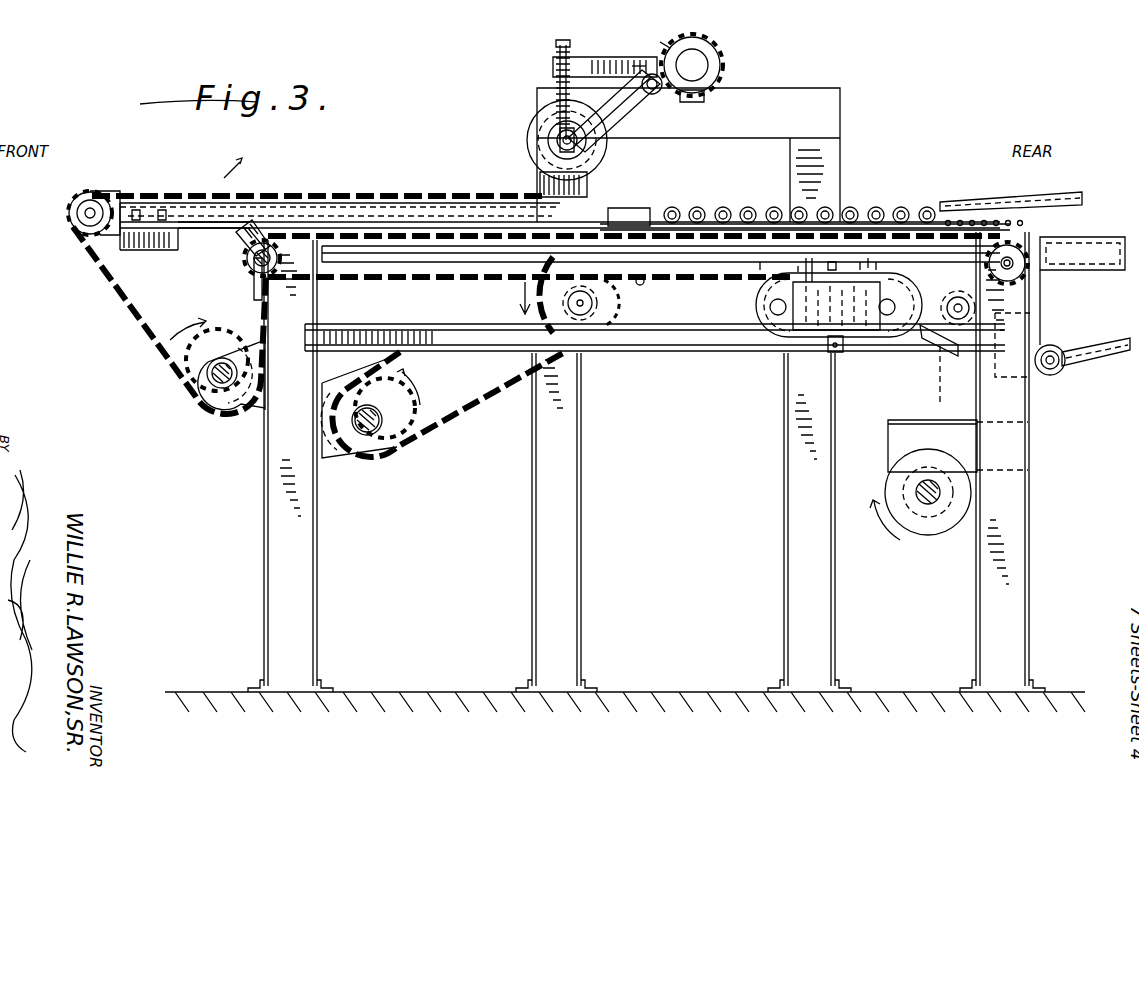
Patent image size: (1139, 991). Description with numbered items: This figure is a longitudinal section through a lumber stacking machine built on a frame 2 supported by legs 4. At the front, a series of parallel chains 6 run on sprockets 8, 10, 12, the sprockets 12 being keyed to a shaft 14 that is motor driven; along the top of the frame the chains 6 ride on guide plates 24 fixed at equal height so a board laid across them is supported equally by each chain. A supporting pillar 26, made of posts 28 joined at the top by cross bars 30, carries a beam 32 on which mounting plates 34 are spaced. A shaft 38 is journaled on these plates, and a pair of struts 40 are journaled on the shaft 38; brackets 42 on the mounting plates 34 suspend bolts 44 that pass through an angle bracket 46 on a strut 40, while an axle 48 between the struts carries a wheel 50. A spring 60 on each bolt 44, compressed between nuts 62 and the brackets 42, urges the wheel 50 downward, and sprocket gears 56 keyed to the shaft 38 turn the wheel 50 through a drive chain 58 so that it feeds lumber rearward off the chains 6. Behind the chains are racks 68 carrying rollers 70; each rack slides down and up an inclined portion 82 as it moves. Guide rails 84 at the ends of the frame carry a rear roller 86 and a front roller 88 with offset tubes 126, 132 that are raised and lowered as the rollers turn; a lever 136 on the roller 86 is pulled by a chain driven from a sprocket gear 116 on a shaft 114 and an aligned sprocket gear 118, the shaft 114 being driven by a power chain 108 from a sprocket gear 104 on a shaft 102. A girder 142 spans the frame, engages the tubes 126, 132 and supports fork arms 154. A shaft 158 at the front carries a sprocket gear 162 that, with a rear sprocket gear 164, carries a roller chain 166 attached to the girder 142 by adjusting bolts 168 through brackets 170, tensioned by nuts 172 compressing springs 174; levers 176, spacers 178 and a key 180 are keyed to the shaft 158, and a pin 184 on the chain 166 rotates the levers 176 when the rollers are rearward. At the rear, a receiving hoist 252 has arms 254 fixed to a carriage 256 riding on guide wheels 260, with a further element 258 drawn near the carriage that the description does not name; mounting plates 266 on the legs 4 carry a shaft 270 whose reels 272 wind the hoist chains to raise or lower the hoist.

The frame 2 is at (153, 210).
The legs 4 is at (318, 519).
The chains 6 is at (287, 312).
The sprocket 8 is at (92, 204).
The sprocket 10 is at (540, 214).
The sprocket 12 is at (203, 397).
The shaft 14 is at (222, 386).
The guide plates 24 is at (386, 204).
The supporting pillar 26 is at (808, 90).
The posts 28 is at (581, 542).
The cross bars 30 is at (815, 111).
The beam 32 is at (722, 59).
The mounting plates 34 is at (666, 48).
The shaft 38 is at (705, 95).
The struts 40 is at (640, 118).
The brackets 42 is at (578, 57).
The bolts 44 is at (548, 128).
The angle bracket 46 is at (548, 147).
The axle 48 is at (580, 150).
The wheel 50 is at (610, 157).
The sprocket gears 56 is at (688, 109).
The drive chain 58 is at (640, 70).
The spring 60 is at (556, 72).
The nuts 62 is at (552, 108).
The racks 68 is at (660, 208).
The rollers 70 is at (726, 207).
The inclined portion 82 is at (600, 230).
The guide rails 84 is at (750, 336).
The rear roller 86 is at (793, 320).
The front roller 88 is at (953, 301).
The shaft 102 is at (365, 432).
The sprocket gear 104 is at (390, 450).
The power chain 108 is at (478, 415).
The shaft 114 is at (586, 318).
The sprocket gear 116 is at (626, 312).
The sprocket gear 118 is at (939, 383).
The tube 126 is at (775, 302).
The tube 132 is at (842, 340).
The lever 136 is at (932, 345).
The girder 142 is at (812, 342).
The fork arms 154 is at (1052, 188).
The shaft 158 is at (242, 241).
The sprocket gear 162 is at (247, 262).
The sprocket gear 164 is at (1038, 330).
The roller chain 166 is at (450, 279).
The adjusting bolts 168 is at (832, 262).
The brackets 170 is at (876, 262).
The nuts 172 is at (868, 258).
The springs 174 is at (860, 262).
The levers 176 is at (197, 224).
The spacers 178 is at (809, 262).
The key 180 is at (641, 285).
The pin 184 is at (252, 246).
The receiving hoist 252 is at (1055, 287).
The arms 254 is at (1082, 253).
The carriage 256 is at (1052, 312).
The roller 258 is at (1052, 375).
The guide wheels 260 is at (1022, 250).
The mounting plates 266 is at (916, 456).
The shaft 270 is at (945, 492).
The reels 272 is at (915, 526).